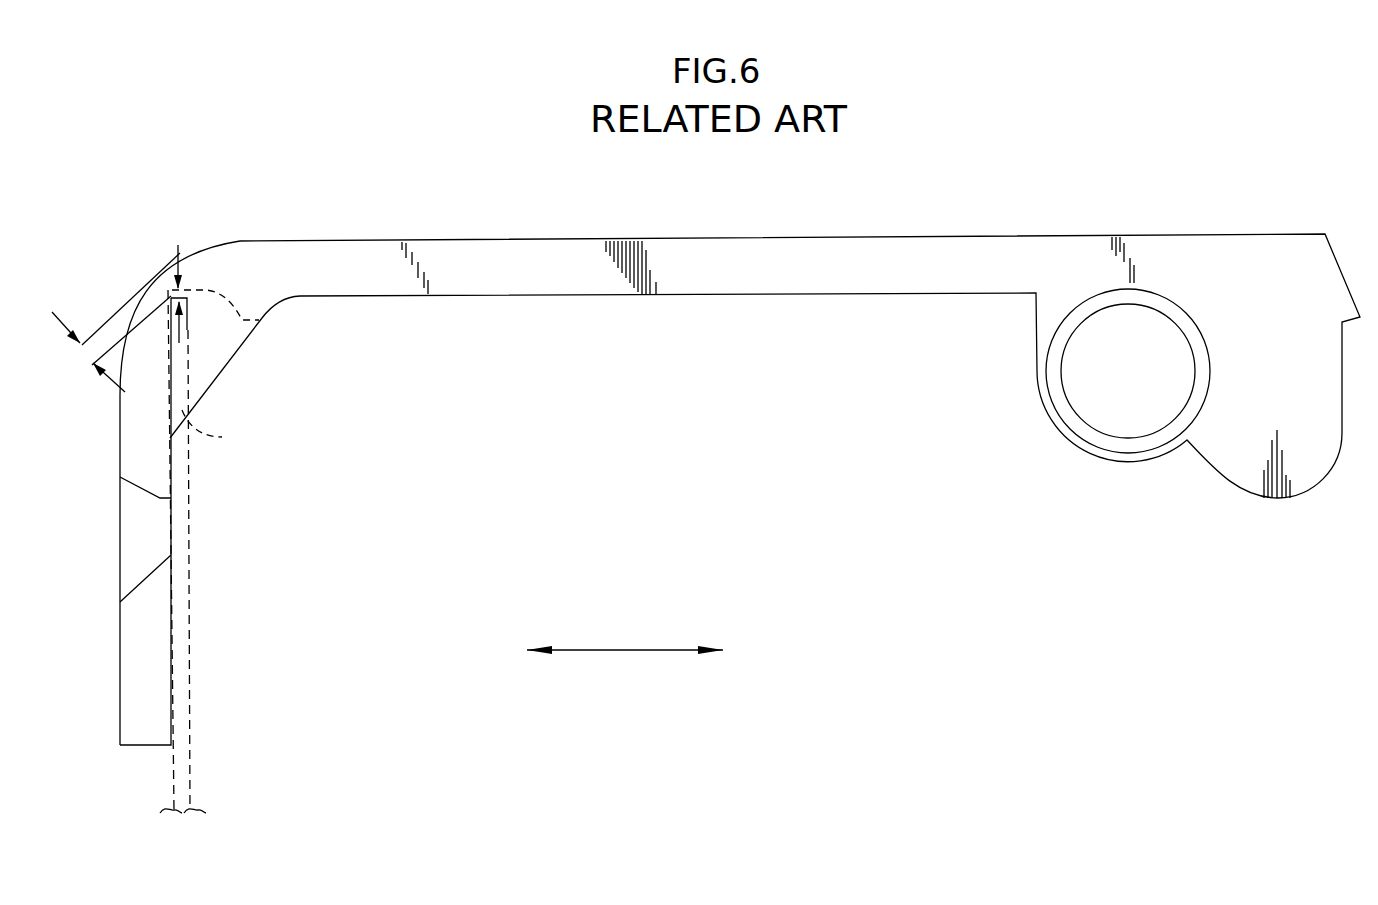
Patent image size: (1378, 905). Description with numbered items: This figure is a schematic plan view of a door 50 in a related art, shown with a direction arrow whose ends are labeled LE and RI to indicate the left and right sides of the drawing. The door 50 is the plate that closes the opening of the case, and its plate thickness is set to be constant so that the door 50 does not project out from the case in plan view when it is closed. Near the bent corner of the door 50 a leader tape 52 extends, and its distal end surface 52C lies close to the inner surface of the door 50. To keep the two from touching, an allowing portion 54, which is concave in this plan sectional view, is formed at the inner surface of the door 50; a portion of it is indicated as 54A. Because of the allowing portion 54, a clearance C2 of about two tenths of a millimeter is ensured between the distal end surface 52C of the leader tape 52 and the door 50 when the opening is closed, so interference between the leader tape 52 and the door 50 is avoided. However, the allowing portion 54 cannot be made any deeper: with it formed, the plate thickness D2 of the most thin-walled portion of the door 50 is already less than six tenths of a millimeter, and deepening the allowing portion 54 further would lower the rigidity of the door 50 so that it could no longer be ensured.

The door 50 is at (718, 238).
The leader tape 52 is at (190, 503).
The distal end surface of leader tape 52C is at (190, 303).
The allowing portion 54 is at (195, 322).
The end portion of door glass 54A is at (229, 433).
The clearance C2 is at (188, 290).
The plate thickness D2 is at (90, 356).
The left direction LE is at (605, 651).
The right direction RI is at (727, 651).